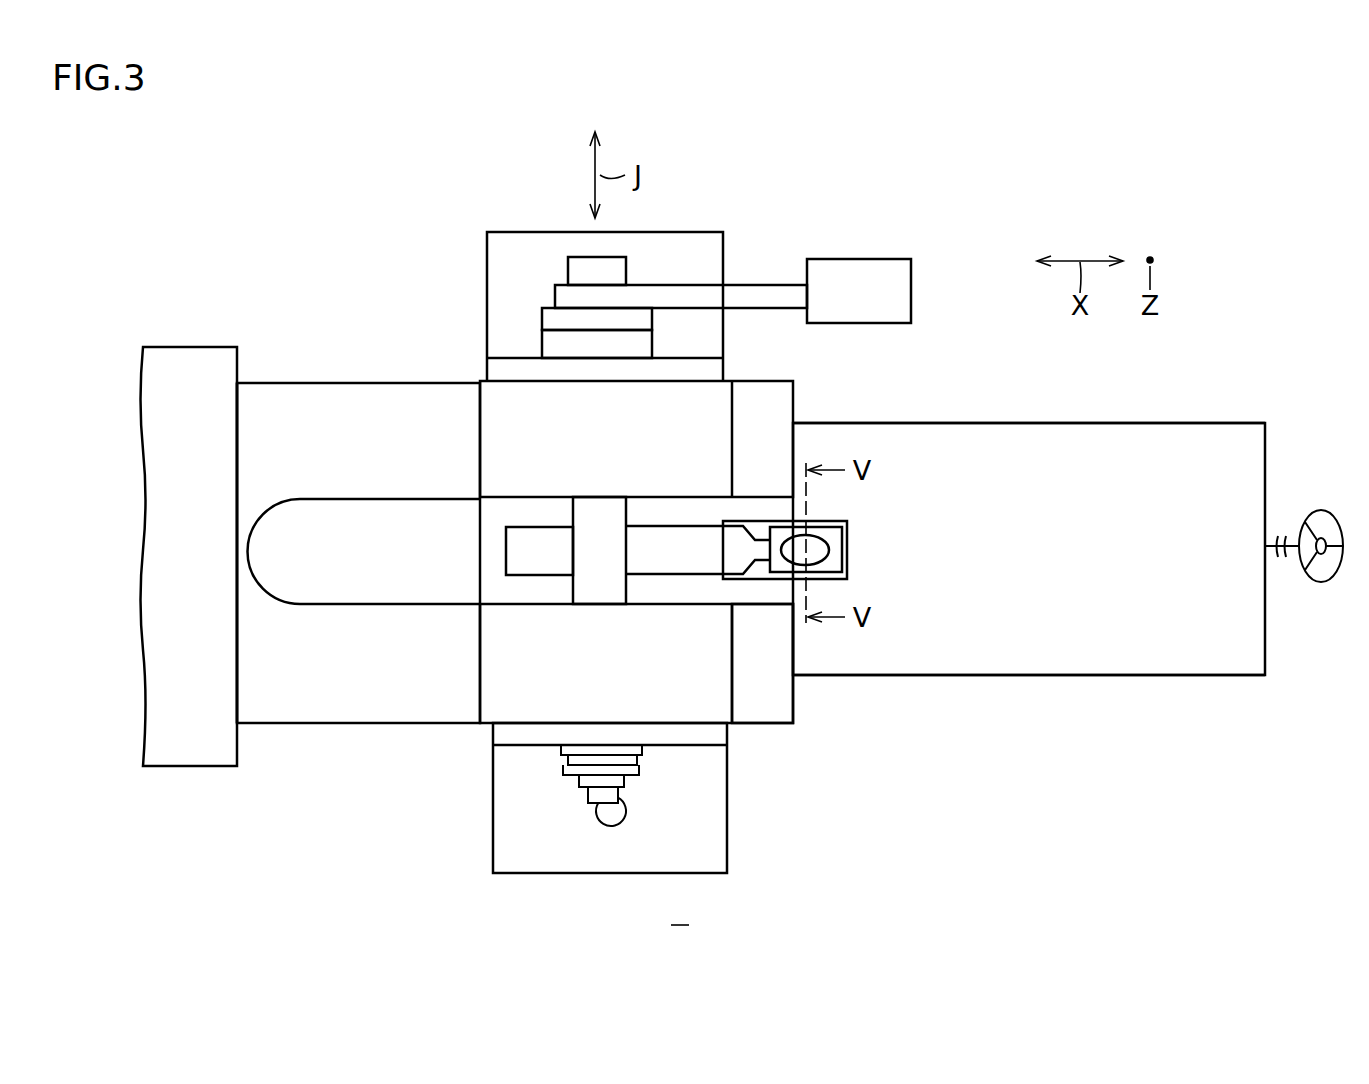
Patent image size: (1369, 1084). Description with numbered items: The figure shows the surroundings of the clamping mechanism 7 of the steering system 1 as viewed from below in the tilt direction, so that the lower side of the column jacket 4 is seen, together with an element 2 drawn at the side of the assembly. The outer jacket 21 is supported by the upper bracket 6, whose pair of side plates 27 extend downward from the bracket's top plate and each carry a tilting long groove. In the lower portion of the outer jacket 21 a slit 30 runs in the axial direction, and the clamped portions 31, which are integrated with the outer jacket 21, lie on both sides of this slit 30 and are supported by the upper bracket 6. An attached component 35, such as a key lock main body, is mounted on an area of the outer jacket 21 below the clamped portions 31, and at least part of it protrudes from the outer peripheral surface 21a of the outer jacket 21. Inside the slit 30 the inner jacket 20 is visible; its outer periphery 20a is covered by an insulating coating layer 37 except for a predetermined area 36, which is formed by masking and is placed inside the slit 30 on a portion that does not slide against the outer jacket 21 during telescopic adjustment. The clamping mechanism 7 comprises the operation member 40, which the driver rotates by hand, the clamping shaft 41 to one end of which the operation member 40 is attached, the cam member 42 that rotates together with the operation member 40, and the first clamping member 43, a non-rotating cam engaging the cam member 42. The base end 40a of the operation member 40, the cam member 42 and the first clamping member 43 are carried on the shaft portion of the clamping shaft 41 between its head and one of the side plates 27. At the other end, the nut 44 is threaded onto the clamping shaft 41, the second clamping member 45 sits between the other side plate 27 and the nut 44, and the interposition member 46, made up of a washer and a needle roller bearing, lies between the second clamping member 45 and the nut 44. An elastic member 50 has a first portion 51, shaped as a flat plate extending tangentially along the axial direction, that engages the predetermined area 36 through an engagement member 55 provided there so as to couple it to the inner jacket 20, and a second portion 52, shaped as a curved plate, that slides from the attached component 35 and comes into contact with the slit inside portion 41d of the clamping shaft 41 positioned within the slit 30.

The steering system 1 is at (680, 910).
The handle 2 is at (1320, 510).
The column jacket 4 is at (1182, 676).
The upper bracket 6 is at (492, 810).
The clamping mechanism 7 is at (552, 272).
The inner jacket 20 is at (1197, 433).
The outer periphery 20a is at (1067, 448).
The outer jacket 21 is at (366, 392).
The outer peripheral surface 21a is at (281, 392).
The side plates 27 is at (710, 371).
The slit 30 is at (658, 500).
The clamped portions 31 is at (757, 702).
The attached component 35 is at (192, 356).
The predetermined area 36 is at (826, 521).
The coating layer 37 is at (885, 435).
The operation member 40 is at (912, 292).
The base end 40a is at (565, 297).
The clamping shaft 41 is at (628, 270).
The slit inside portion 41d is at (598, 500).
The cam member 42 is at (548, 321).
The first clamping member 43 is at (548, 348).
The nut 44 is at (625, 781).
The second clamping member 45 is at (640, 750).
The interposition member 46 is at (641, 769).
The elastic member 50 is at (677, 575).
The first portion 51 is at (833, 565).
The second portion 52 is at (505, 550).
The engagement member 55 is at (822, 550).